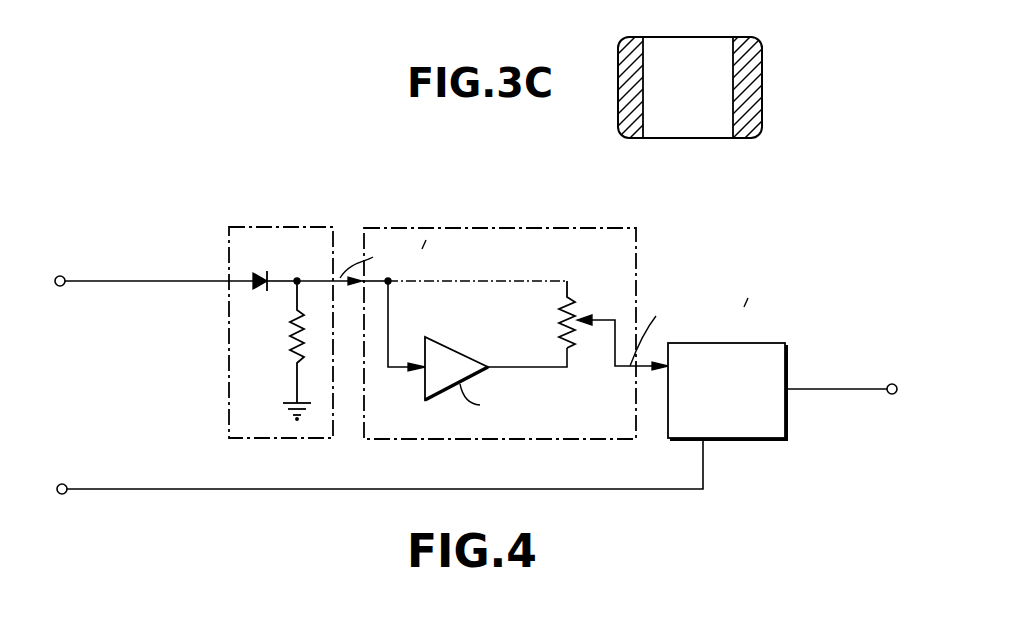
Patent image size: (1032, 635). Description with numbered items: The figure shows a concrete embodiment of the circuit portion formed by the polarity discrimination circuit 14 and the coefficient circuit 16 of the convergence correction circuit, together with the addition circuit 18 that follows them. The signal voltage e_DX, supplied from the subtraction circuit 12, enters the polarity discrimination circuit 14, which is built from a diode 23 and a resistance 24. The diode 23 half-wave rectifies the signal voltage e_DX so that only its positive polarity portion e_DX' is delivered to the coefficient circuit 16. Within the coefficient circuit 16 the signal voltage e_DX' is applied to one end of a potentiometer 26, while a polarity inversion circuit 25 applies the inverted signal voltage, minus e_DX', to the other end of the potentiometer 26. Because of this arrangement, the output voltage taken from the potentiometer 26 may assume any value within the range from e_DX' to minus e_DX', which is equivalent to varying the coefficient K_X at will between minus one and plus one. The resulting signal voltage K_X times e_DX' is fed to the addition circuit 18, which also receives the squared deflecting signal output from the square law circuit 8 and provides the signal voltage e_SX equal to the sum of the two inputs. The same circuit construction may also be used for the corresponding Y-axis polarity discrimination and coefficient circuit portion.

The subtraction circuit 12 is at (146, 260).
The polarity discrimination circuit 14 is at (428, 219).
The coefficient circuit 16 is at (638, 271).
The addition circuit 18 is at (764, 343).
The diode 23 is at (256, 275).
The resistance 24 is at (276, 350).
The polarity inversion circuit 25 is at (458, 352).
The potentiometer 26 is at (570, 305).
The square law circuit 8 is at (374, 475).